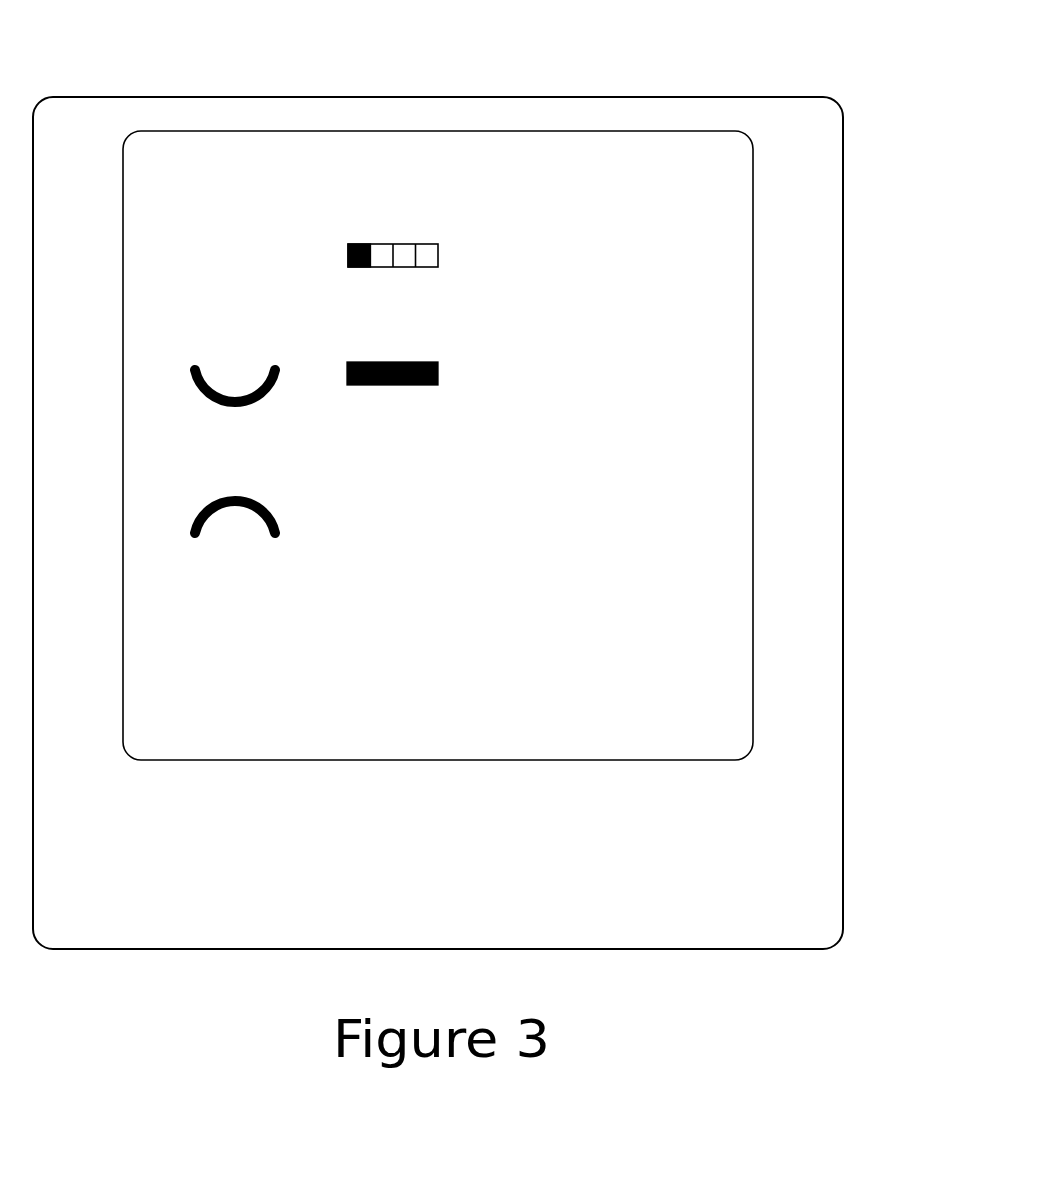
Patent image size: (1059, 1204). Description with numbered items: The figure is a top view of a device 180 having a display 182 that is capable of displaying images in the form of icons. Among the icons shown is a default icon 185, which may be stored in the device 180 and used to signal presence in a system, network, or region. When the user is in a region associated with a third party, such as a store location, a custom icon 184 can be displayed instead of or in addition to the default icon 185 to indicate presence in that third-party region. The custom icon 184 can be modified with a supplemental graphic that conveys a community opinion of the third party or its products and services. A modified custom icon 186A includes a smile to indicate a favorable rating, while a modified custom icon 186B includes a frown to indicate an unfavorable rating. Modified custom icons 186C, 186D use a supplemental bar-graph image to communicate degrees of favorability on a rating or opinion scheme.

The device 180 is at (750, 97).
The display 182 is at (752, 210).
The custom icon 184 is at (258, 173).
The default icon 185 is at (482, 502).
The modified custom icon 186A is at (189, 363).
The modified custom icon 186B is at (187, 530).
The modified custom icon 186C is at (437, 245).
The modified custom icon 186D is at (437, 362).